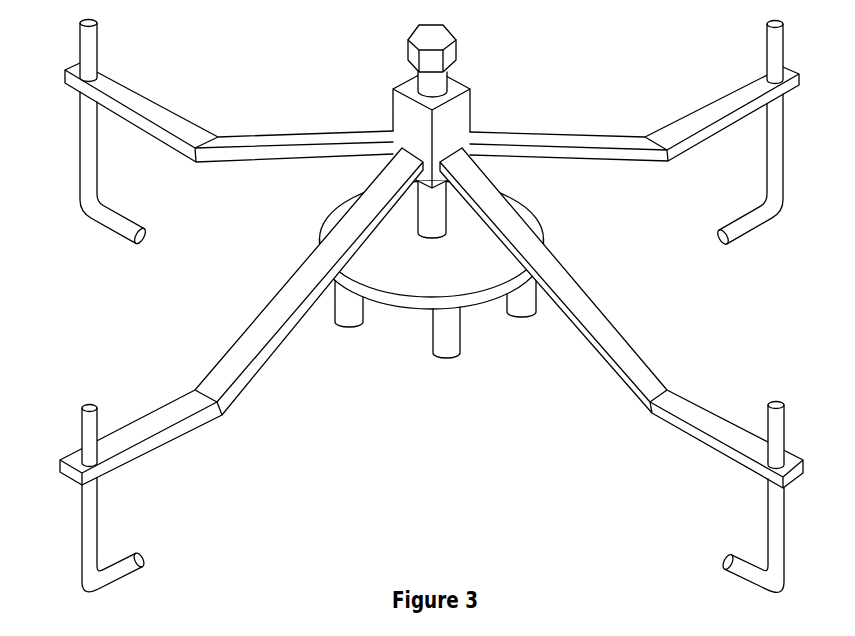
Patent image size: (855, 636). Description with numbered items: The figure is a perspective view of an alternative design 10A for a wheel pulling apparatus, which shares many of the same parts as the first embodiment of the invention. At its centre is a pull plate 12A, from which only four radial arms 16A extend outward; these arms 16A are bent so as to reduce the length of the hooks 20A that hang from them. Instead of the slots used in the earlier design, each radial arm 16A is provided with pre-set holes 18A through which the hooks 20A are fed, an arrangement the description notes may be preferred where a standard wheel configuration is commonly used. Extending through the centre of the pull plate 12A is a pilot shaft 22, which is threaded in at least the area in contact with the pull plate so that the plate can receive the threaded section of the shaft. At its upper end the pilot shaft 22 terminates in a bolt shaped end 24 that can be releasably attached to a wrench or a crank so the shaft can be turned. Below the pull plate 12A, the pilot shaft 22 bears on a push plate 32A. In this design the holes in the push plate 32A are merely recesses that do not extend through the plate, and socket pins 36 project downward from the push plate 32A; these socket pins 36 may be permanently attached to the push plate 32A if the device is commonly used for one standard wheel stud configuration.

The alternative design for a wheel pulling apparatus 10A is at (434, 302).
The pull plate 12A is at (462, 115).
The radial arms 16A is at (238, 153).
The pre-set holes 18A is at (72, 68).
The hooks 20A is at (80, 143).
The pilot shaft 22 is at (440, 218).
The bolt shaped end 24 is at (451, 53).
The push plate 32A is at (456, 270).
The socket pins 36 is at (361, 312).